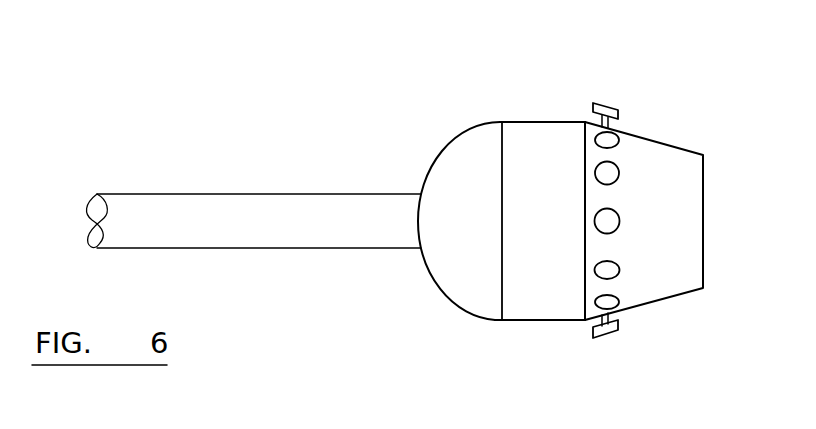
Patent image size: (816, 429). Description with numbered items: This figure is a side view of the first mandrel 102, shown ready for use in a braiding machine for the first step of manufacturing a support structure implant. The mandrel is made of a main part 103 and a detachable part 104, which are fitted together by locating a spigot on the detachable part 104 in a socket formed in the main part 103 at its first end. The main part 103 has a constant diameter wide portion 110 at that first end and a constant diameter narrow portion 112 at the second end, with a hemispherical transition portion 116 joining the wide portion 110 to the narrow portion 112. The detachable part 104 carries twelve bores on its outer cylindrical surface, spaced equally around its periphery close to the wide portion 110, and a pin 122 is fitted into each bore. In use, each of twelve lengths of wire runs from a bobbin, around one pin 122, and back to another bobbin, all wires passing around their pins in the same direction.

The first mandrel 102 is at (353, 171).
The narrow portion 112 is at (262, 233).
The wide portion 110 is at (532, 122).
The hemispherical transition portion 116 is at (482, 234).
The main part 103 is at (560, 234).
The detachable part 104 is at (643, 234).
The pin 122 is at (608, 175).